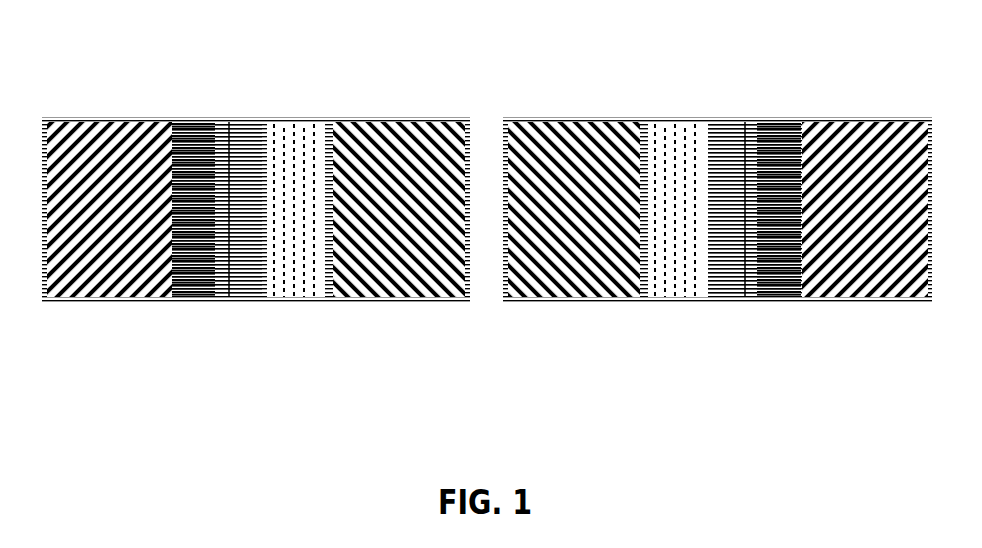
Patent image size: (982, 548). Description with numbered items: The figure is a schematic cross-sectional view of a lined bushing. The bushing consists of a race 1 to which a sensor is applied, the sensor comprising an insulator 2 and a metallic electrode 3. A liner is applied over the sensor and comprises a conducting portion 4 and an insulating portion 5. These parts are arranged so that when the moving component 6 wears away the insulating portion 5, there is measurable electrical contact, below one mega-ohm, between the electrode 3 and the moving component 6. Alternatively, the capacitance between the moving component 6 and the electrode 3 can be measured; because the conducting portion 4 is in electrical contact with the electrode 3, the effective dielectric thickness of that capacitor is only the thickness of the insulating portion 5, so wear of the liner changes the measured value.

The race 1 is at (68, 120).
The insulator 2 is at (185, 268).
The metallic electrode 3 is at (221, 133).
The conducting portion 4 is at (252, 290).
The insulating portion 5 is at (308, 147).
The moving component 6 is at (352, 272).